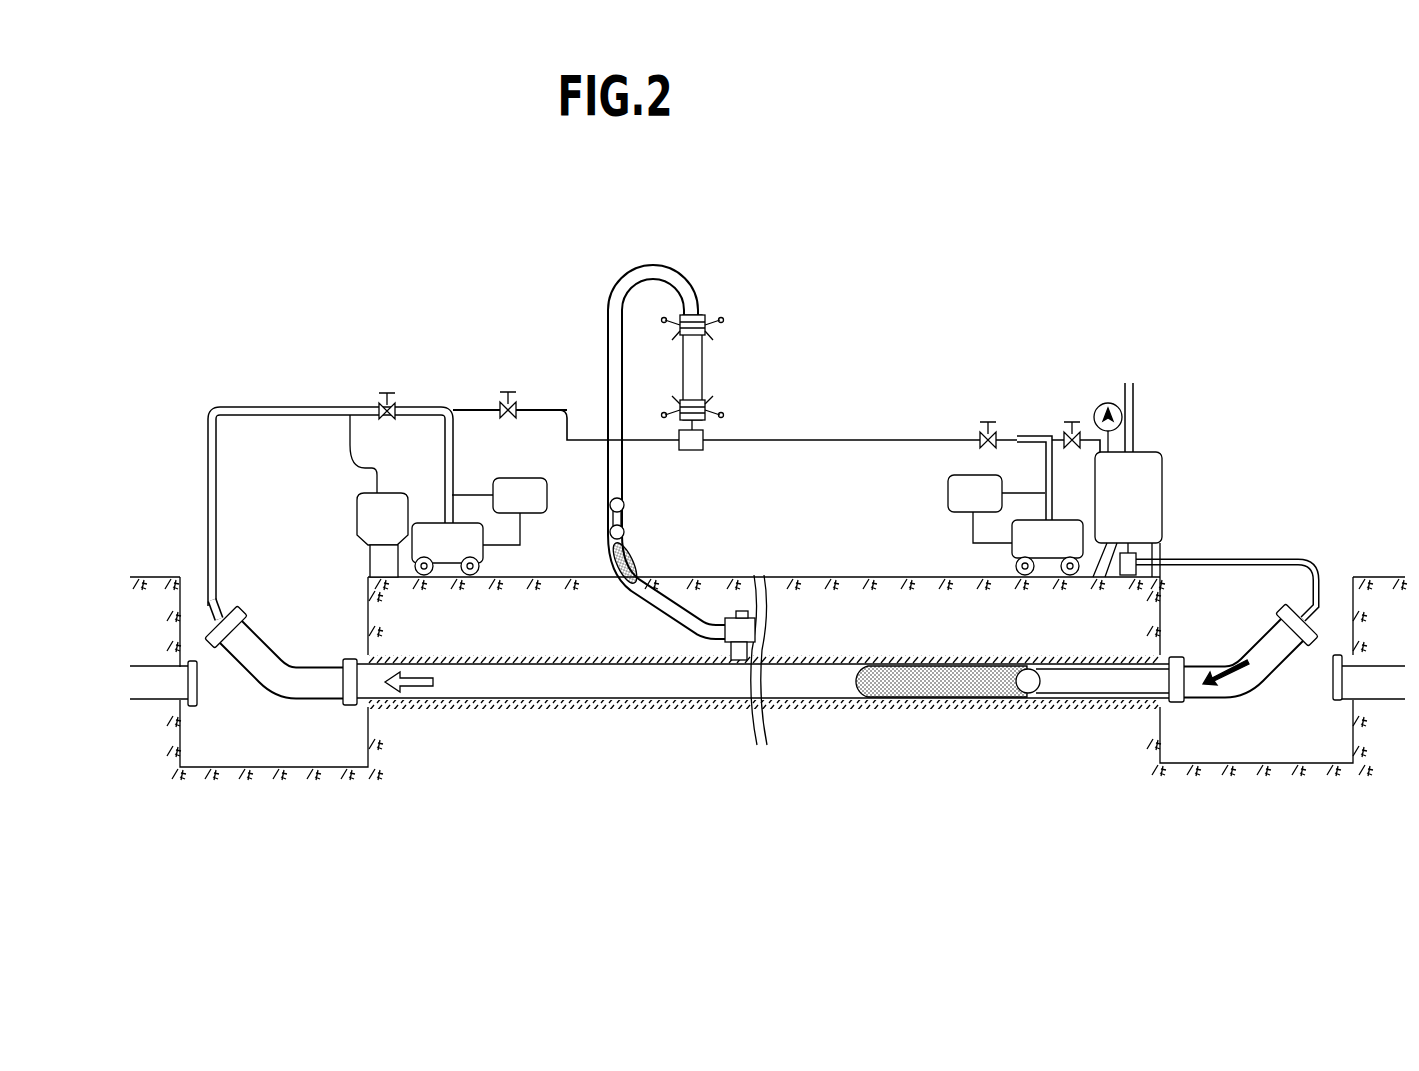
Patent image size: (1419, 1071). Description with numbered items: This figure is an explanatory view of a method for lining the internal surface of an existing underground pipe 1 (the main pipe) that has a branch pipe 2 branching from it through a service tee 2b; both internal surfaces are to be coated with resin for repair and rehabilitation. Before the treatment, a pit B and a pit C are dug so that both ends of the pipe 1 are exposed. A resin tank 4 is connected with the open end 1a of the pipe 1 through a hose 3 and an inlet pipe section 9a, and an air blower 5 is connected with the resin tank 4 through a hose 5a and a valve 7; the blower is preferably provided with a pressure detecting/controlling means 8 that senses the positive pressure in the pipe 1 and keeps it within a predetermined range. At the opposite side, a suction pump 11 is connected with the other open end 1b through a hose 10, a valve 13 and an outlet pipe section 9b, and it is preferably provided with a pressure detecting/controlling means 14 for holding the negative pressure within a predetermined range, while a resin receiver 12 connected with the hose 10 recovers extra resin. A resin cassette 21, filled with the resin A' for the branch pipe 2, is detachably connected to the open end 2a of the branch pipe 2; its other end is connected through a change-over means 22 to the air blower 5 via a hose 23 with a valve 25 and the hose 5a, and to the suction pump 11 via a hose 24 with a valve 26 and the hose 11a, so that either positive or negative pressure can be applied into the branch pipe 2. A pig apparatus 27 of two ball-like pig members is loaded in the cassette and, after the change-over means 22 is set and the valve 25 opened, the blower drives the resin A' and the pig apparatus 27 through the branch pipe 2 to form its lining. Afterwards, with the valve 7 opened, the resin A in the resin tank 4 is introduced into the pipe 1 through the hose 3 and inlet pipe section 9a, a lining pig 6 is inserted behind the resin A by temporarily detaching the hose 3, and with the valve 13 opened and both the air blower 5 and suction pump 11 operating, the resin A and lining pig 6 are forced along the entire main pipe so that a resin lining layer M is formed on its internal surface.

The existing underground pipe 1 is at (620, 685).
The open end 1a is at (1178, 657).
The other open end 1b is at (345, 659).
The branch pipe 2 is at (700, 578).
The open end 2a is at (700, 288).
The service tee 2b is at (755, 629).
The hose 3 is at (1213, 556).
The resin tank 4 is at (1153, 470).
The air blower 5 is at (1040, 578).
The hose 5a is at (1044, 437).
The lining pig 6 is at (1025, 692).
The valve 7 is at (1070, 422).
The pressure detecting/controlling means 8 is at (948, 488).
The inlet pipe section 9a is at (1277, 650).
The outlet pipe section 9b is at (255, 660).
The hose 10 is at (208, 472).
The suction pump 11 is at (440, 578).
The hose 11a is at (452, 415).
The resin receiver 12 is at (357, 518).
The valve 13 is at (385, 392).
The pressure detecting/controlling means 14 is at (500, 488).
The resin cassette 21 is at (705, 365).
The change-over means 22 is at (688, 450).
The hose 23 is at (752, 440).
The hose 24 is at (548, 410).
The valve 25 is at (988, 422).
The valve 26 is at (508, 392).
The pig apparatus 27 is at (632, 493).
The resin A is at (933, 737).
The resin A' is at (618, 584).
The pit B is at (292, 746).
The pit C is at (1242, 749).
The resin lining layer M is at (1078, 682).